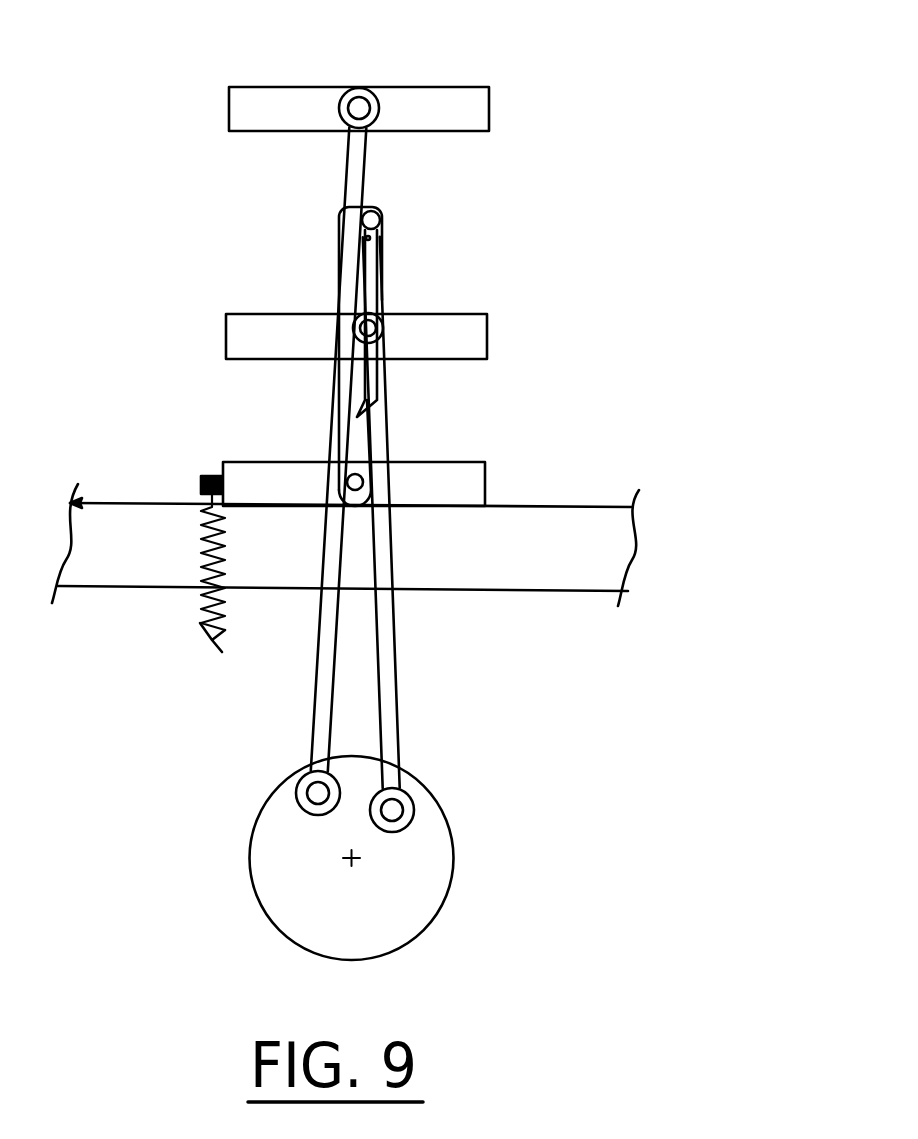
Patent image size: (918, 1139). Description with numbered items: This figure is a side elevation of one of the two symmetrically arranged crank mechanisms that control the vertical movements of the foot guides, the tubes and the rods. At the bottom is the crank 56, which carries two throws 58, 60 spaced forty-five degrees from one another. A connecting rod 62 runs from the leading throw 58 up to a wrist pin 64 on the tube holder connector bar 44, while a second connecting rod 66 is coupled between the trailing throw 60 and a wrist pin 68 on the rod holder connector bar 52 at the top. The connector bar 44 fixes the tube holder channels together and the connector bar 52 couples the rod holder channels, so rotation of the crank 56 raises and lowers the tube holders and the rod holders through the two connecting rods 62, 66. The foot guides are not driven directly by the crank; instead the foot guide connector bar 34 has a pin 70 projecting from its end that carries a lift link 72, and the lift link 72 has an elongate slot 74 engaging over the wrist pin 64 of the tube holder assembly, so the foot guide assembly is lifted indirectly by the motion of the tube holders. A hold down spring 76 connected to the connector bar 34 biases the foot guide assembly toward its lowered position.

The connector bar 34 is at (470, 483).
The connector bar 44 is at (423, 340).
The connector bar 52 is at (292, 100).
The crank 56 is at (475, 855).
The leading throw 58 is at (392, 810).
The trailing throw 60 is at (318, 793).
The connecting rod 62 is at (383, 673).
The wrist pin 64 is at (370, 316).
The connecting rod 66 is at (327, 673).
The wrist pin 68 is at (360, 107).
The pin 70 is at (352, 480).
The lift link 72 is at (340, 258).
The elongate slot 74 is at (368, 238).
The hold down spring 76 is at (198, 602).